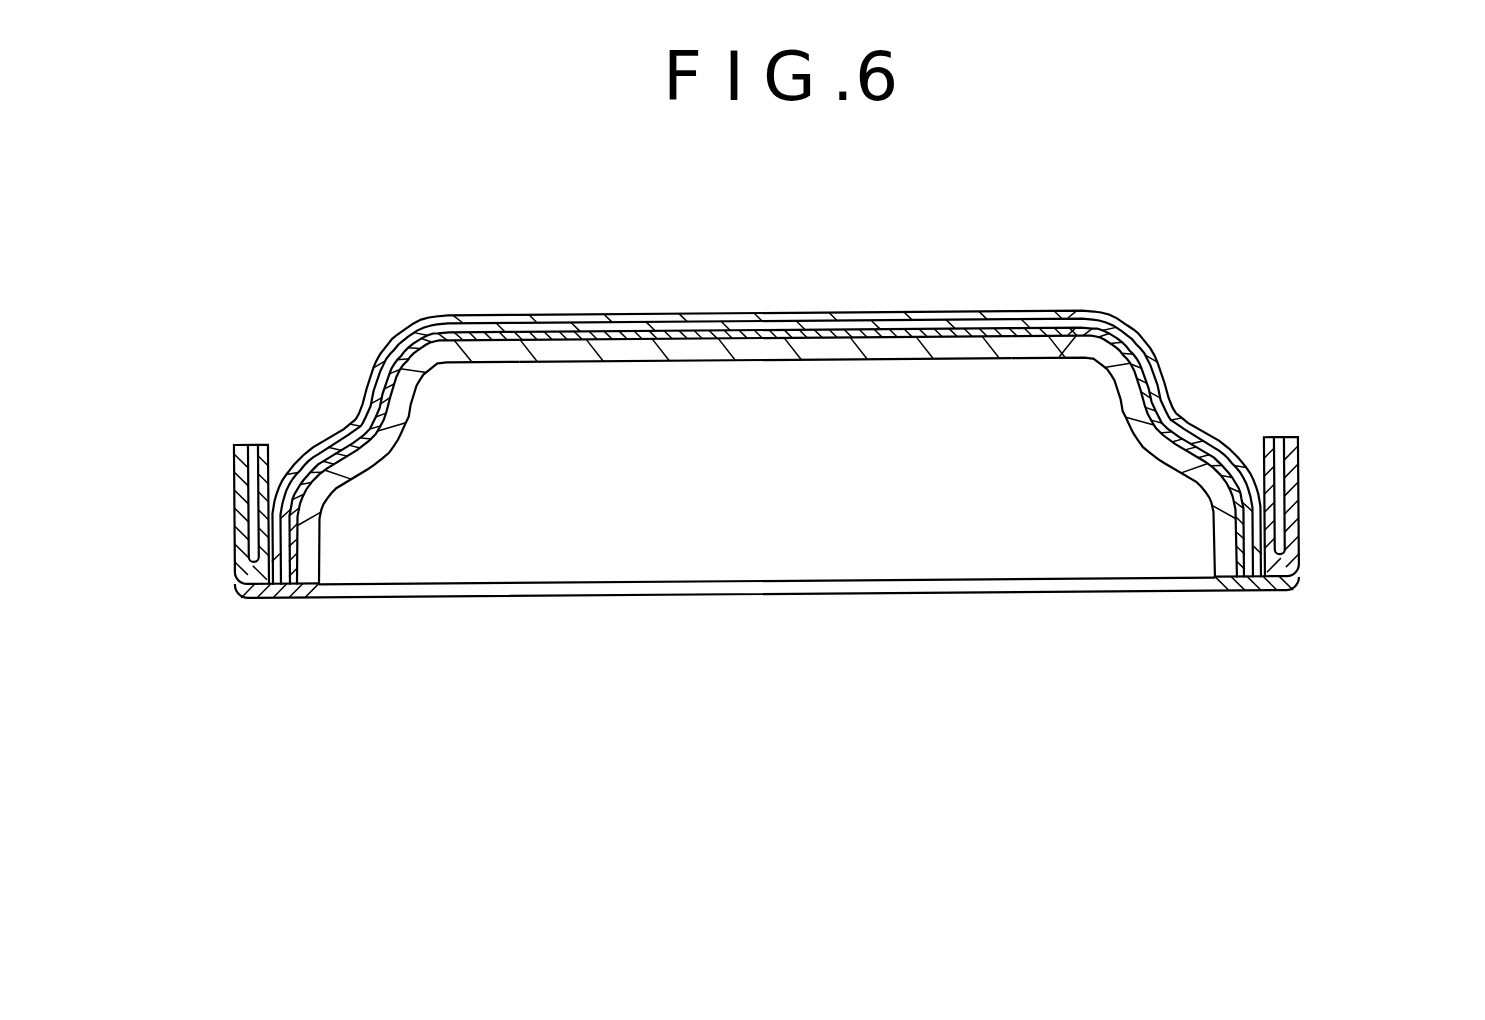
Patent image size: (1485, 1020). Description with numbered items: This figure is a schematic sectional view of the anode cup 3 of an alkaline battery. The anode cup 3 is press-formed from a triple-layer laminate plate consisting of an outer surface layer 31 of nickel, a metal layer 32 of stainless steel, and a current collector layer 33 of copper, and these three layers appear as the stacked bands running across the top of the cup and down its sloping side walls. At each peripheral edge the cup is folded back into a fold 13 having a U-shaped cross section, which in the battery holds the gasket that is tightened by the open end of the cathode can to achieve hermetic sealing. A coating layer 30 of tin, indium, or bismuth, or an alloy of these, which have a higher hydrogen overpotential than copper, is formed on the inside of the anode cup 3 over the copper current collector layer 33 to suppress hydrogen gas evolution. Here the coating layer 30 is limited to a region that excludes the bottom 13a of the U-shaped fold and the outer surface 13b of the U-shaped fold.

The anode cup 3 is at (762, 224).
The coating layer 30 is at (900, 352).
The outer surface layer 31 is at (610, 318).
The metal layer 32 is at (677, 324).
The current collector layer 33 is at (745, 333).
The fold 13 is at (1407, 458).
The bottom of the U-shaped fold 13a is at (266, 598).
The outer surface of the U-shaped fold 13b is at (233, 479).